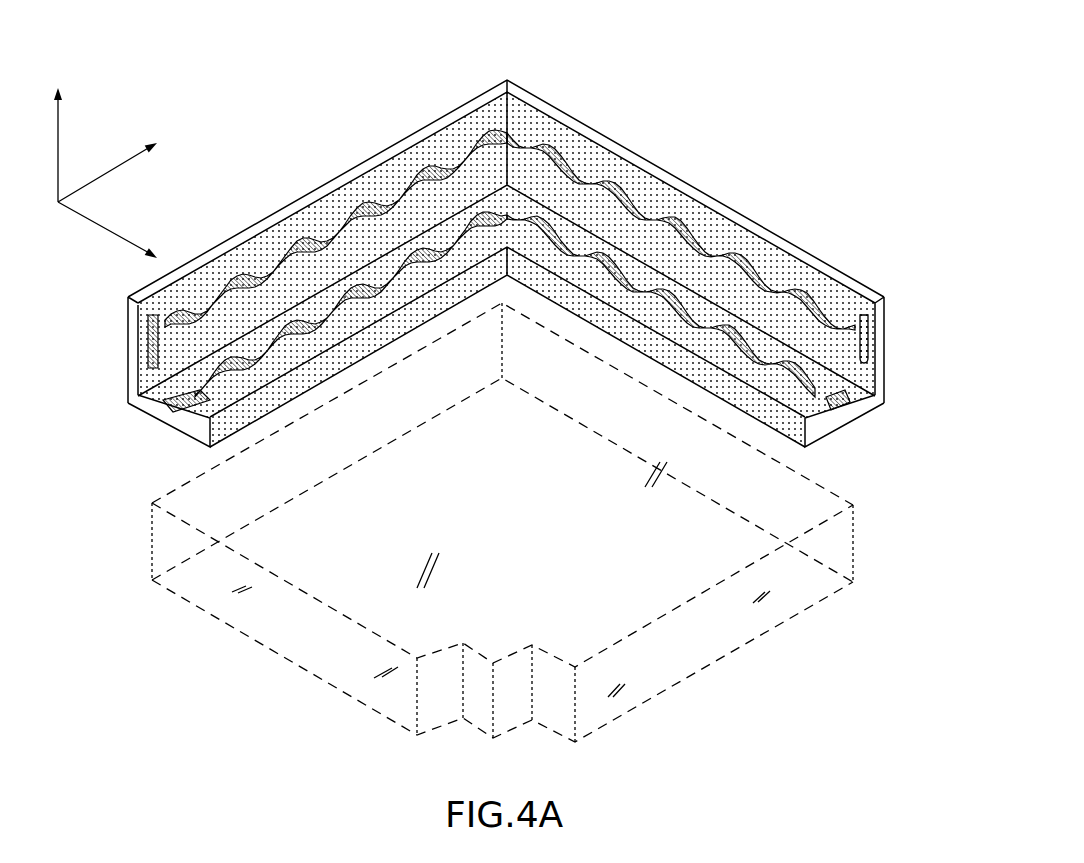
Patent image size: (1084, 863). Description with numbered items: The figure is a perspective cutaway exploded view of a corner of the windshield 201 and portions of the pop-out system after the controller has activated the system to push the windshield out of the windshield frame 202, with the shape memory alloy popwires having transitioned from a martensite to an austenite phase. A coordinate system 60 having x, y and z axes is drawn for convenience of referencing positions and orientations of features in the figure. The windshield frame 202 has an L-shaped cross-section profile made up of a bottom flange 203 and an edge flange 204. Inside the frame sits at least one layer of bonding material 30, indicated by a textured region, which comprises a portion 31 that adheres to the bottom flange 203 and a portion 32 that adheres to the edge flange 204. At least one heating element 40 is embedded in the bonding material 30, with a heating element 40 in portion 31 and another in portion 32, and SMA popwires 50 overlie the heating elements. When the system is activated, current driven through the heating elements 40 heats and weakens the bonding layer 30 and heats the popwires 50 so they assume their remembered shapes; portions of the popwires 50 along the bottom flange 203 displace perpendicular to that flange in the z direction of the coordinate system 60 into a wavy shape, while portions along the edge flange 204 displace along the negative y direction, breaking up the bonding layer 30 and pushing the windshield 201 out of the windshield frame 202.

The coordinate system 60 is at (110, 56).
The bonding material 30 is at (598, 130).
The portion of bonding material 31 is at (187, 425).
The portion of bonding material 32 is at (140, 373).
The heating element 40 is at (508, 92).
The SMA popwire 50 is at (405, 198).
The windshield 201 is at (512, 498).
The windshield frame 202 is at (297, 195).
The bottom flange 203 is at (860, 413).
The edge flange 204 is at (880, 347).